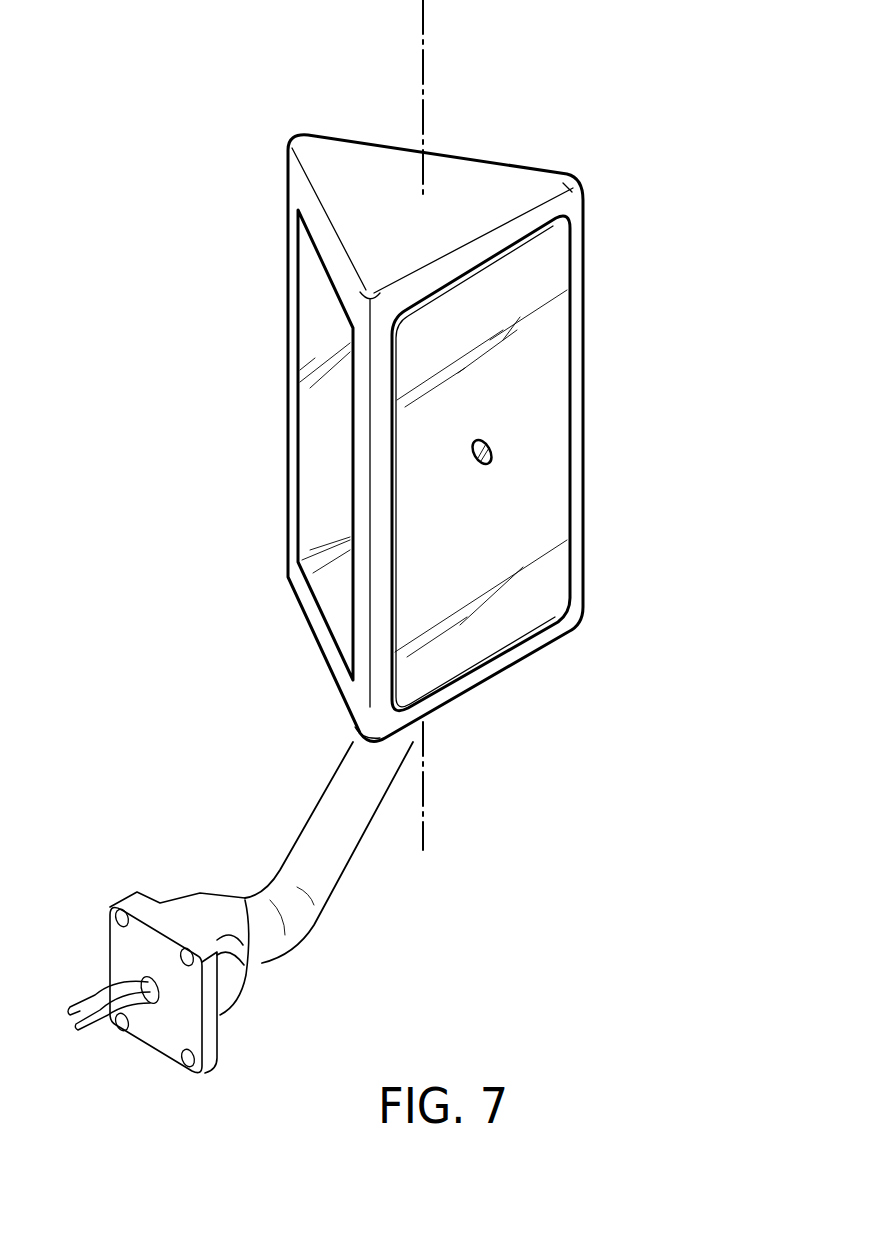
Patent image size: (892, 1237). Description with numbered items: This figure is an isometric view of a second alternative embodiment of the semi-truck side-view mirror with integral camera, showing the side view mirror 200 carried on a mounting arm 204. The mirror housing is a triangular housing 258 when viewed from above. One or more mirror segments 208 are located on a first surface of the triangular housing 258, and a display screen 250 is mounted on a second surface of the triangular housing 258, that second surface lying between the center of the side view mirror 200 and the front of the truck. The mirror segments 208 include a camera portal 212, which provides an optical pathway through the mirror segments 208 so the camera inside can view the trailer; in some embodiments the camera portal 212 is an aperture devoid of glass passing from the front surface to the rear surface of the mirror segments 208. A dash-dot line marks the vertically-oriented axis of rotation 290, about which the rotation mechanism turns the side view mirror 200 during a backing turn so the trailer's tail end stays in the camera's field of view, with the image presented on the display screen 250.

The side view mirror 200 is at (484, 408).
The mounting arm 204 is at (320, 870).
The mirror segments 208 is at (557, 576).
The camera portal 212 is at (580, 446).
The display screen 250 is at (325, 427).
The triangular housing 258 is at (507, 185).
The vertically-oriented axis of rotation 290 is at (423, 73).